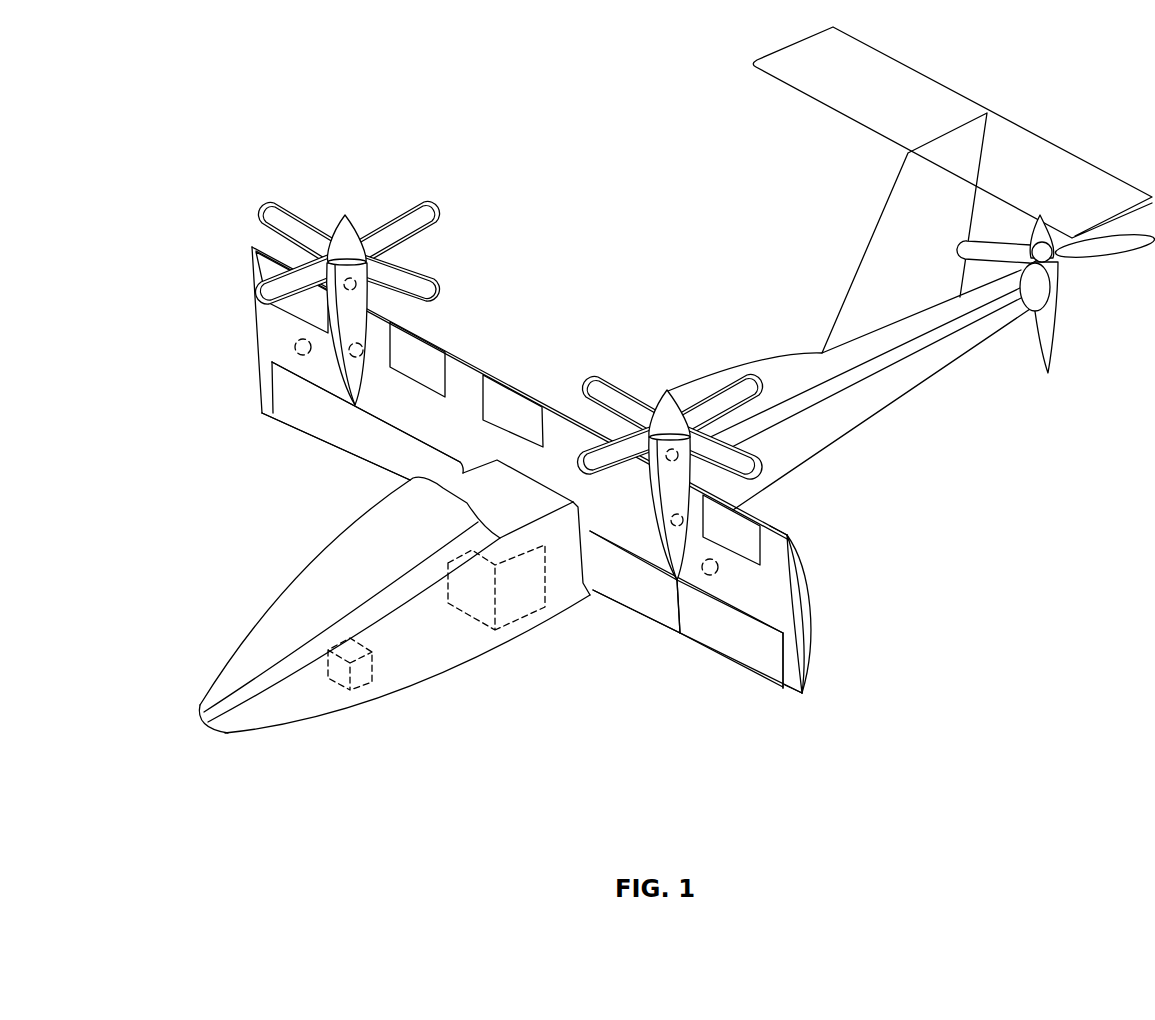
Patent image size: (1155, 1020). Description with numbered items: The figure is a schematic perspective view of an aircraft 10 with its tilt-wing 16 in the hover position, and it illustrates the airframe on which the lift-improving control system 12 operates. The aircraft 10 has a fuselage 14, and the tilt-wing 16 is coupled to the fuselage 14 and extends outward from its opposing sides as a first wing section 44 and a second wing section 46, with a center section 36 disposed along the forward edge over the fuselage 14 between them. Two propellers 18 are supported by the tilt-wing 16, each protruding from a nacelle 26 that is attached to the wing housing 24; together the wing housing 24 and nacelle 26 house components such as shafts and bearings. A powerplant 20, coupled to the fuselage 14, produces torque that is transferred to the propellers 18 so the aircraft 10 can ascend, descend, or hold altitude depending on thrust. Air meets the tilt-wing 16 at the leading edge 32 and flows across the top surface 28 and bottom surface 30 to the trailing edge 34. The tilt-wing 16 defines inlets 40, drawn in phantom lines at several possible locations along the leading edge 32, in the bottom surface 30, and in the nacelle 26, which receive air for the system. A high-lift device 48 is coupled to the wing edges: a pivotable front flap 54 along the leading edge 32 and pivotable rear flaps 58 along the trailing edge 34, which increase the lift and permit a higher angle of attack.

The aircraft 10 is at (217, 150).
The control system 12 is at (378, 693).
The fuselage 14 is at (857, 432).
The tilt-wing 16 is at (802, 592).
The propeller 18 is at (352, 220).
The powerplant 20 is at (523, 630).
The wing housing 24 is at (268, 328).
The nacelle 26 is at (353, 303).
The top surface 28 is at (806, 541).
The bottom surface 30 is at (476, 380).
The leading edge 32 is at (787, 535).
The trailing edge 34 is at (802, 693).
The center section 36 is at (513, 407).
The inlet 40 is at (357, 352).
The first wing section 44 is at (796, 634).
The second wing section 46 is at (235, 376).
The high-lift device 48 is at (272, 267).
The front flap 54 is at (264, 292).
The rear flap 58 is at (446, 516).